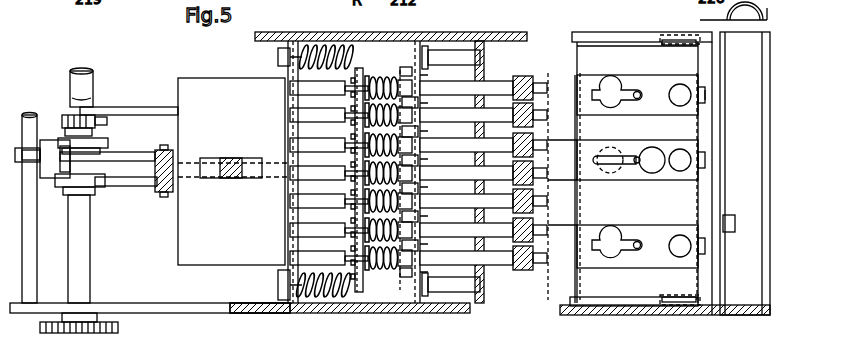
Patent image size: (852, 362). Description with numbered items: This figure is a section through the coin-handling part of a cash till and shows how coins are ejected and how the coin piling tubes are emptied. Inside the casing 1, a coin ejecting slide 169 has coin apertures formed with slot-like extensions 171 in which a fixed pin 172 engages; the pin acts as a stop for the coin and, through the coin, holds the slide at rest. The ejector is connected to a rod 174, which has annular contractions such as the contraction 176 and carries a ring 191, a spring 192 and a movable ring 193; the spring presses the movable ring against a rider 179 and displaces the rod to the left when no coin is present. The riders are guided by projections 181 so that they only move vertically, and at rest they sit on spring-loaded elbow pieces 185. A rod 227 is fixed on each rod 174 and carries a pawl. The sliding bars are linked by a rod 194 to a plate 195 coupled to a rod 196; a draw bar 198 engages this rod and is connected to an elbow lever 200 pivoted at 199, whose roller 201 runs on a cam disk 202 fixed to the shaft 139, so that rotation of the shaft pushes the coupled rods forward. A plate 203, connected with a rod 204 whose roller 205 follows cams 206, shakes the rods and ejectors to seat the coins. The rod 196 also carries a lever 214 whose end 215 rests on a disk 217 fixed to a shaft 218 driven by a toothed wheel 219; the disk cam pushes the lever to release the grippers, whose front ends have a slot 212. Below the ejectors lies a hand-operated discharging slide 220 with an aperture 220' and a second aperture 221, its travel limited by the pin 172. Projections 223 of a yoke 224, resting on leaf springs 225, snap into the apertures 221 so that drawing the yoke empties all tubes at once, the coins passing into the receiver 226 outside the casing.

The casing 1 is at (556, 314).
The shaft 139 is at (72, 104).
The coin ejecting slide 169 is at (584, 148).
The slot-like extension 171 is at (628, 155).
The pin 172 is at (641, 92).
The rod 174 is at (500, 125).
The annular contraction 176 is at (345, 108).
The rider 179 is at (418, 125).
The projection 181 is at (418, 130).
The elbow piece 185 is at (345, 136).
The ring 191 is at (345, 191).
The spring 192 is at (405, 80).
The ring 193 is at (345, 219).
The rod 194 is at (458, 56).
The plate 195 is at (285, 271).
The rod 196 is at (205, 180).
The draw bar 198 is at (125, 157).
The pivot 199 is at (33, 252).
The elbow lever 200 is at (33, 157).
The roller 201 is at (60, 150).
The cam disk 202 is at (100, 143).
The plate 203 is at (210, 82).
The rod 204 is at (140, 110).
The roller 205 is at (92, 118).
The cam 206 is at (107, 121).
The slot 212 is at (382, 32).
The lever 214 is at (140, 188).
The lever end 215 is at (92, 195).
The disk 217 is at (60, 187).
The shaft 218 is at (86, 82).
The toothed wheel 219 is at (120, 326).
The discharging slide 220 is at (641, 161).
The aperture 220' is at (624, 156).
The second aperture 221 is at (680, 149).
The projection 223 is at (700, 258).
The yoke 224 is at (590, 302).
The leaf spring 225 is at (670, 36).
The receiver 226 is at (745, 173).
The rod 227 is at (535, 100).